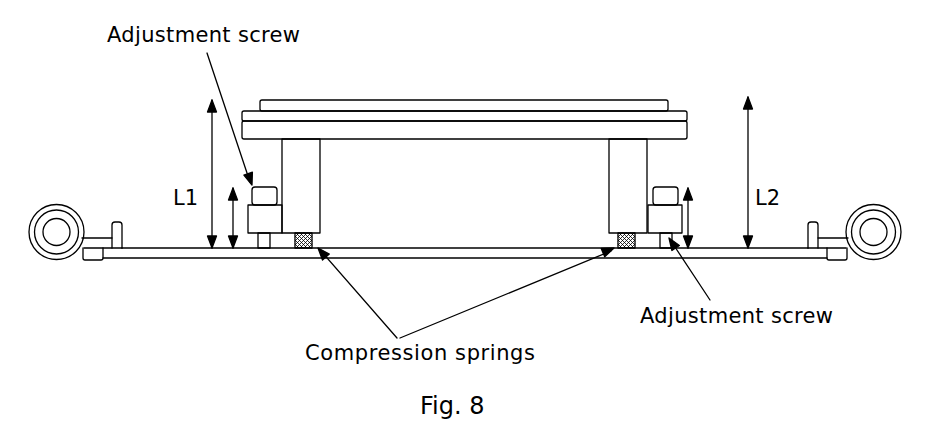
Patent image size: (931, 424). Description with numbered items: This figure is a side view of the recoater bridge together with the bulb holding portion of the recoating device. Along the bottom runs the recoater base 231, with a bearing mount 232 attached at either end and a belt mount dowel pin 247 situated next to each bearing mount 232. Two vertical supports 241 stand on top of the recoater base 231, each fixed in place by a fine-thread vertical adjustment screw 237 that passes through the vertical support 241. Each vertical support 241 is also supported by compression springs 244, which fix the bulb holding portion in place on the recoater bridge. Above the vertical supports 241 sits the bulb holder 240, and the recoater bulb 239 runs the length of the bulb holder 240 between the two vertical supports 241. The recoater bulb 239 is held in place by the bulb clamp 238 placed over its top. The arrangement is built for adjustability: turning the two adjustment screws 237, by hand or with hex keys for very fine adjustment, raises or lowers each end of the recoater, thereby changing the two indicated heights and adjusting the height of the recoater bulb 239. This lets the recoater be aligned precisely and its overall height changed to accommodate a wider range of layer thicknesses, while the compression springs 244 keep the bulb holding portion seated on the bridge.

The recoater base 231 is at (468, 257).
The bearing mount 232 is at (74, 208).
The vertical adjustment screw 237 is at (256, 234).
The bulb clamp 238 is at (688, 112).
The recoater bulb 239 is at (583, 100).
The bulb holder 240 is at (688, 128).
The vertical support 241 is at (608, 162).
The compression spring 244 is at (312, 240).
The belt mount dowel pin 247 is at (118, 234).